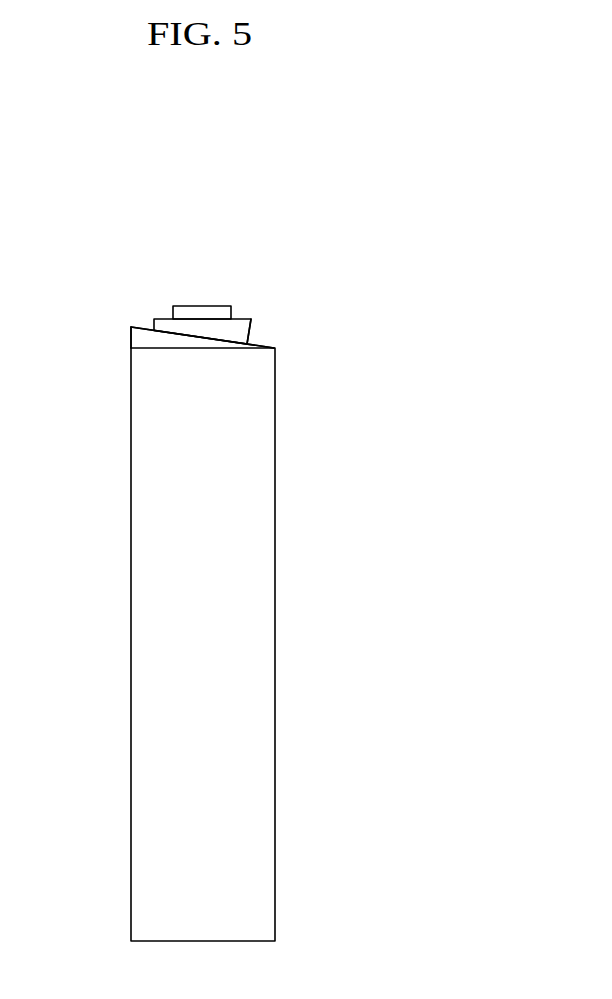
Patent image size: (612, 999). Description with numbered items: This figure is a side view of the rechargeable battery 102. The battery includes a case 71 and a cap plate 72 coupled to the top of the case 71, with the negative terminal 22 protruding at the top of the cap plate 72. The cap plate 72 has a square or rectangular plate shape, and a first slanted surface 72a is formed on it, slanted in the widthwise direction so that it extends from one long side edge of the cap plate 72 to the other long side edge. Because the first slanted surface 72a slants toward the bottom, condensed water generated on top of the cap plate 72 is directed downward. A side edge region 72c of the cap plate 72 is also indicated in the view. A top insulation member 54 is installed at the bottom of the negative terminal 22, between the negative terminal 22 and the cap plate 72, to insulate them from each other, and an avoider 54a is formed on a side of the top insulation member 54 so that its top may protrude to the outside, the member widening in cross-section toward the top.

The rechargeable battery 102 is at (221, 196).
The case 71 is at (275, 582).
The cap plate 72 is at (125, 317).
The first slanted surface 72a is at (142, 326).
The side edge of cap plate 72c is at (131, 343).
The top insulation member 54 is at (237, 332).
The avoider 54a is at (250, 333).
The negative terminal 22 is at (203, 306).